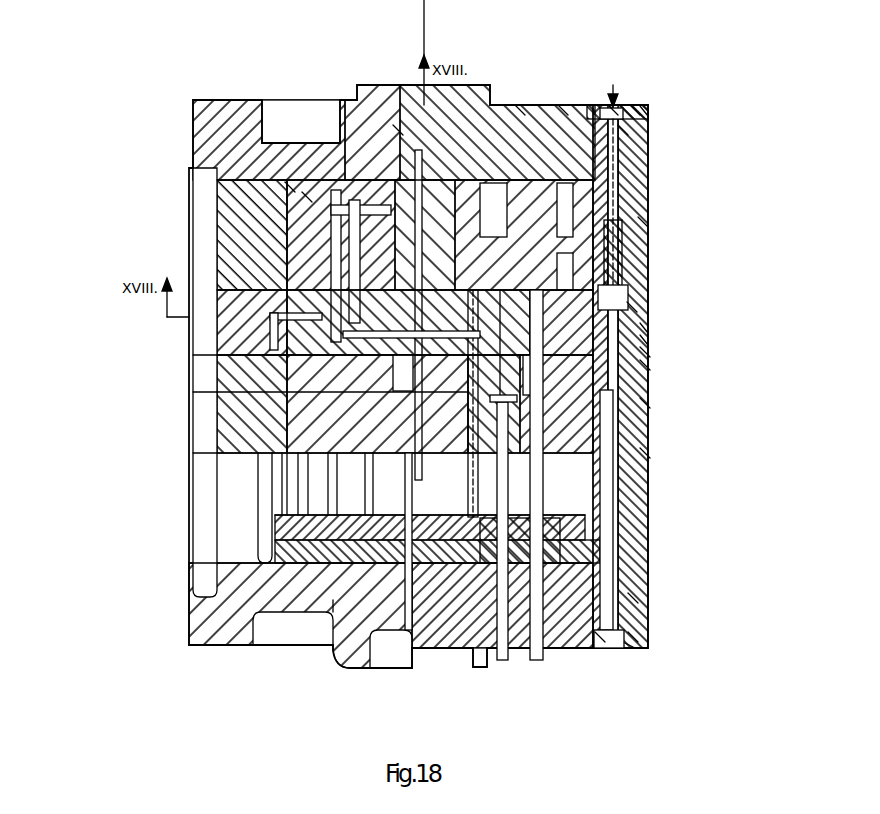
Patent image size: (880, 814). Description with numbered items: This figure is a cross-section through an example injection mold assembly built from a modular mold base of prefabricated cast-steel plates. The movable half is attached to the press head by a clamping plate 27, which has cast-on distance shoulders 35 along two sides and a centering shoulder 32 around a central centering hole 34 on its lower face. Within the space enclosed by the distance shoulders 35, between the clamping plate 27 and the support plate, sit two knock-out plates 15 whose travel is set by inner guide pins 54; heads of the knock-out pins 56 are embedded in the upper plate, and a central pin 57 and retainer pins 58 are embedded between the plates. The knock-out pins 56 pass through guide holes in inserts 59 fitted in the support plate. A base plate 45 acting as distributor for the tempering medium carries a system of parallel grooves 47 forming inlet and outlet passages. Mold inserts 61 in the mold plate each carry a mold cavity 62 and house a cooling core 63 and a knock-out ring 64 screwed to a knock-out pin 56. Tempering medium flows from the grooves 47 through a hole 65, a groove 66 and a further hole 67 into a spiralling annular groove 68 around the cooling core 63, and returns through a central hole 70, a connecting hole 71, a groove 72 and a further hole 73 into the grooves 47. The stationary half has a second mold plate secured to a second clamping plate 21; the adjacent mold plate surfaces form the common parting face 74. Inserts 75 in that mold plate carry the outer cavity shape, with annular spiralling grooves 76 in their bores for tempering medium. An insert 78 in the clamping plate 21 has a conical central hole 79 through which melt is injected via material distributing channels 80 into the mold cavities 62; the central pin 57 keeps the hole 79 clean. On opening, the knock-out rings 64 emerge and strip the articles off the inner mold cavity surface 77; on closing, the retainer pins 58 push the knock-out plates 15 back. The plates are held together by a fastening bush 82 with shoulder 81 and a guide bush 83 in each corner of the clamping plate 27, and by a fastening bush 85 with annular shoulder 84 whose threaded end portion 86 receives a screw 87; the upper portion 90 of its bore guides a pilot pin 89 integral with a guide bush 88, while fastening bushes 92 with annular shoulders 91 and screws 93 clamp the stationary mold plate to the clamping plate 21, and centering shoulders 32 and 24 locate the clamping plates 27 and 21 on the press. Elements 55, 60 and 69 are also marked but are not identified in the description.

The knock-out plates 15 is at (300, 520).
The second clamping plate 21 is at (632, 152).
The centering shoulder 24 is at (343, 100).
The clamping plate 27 is at (228, 640).
The centering shoulder 32 is at (468, 640).
The central centering hole 34 is at (405, 622).
The distance shoulders 35 is at (235, 472).
The base plate 45 is at (235, 392).
The parallel grooves 47 is at (232, 354).
The inner guide pins 54 is at (525, 635).
The recess 55 is at (290, 622).
The knock-out pins 56 is at (462, 575).
The central pin 57 is at (333, 605).
The retainer pins 58 is at (634, 540).
The inserts 59 is at (300, 420).
The lower block 60 is at (230, 638).
The mold inserts 61 is at (252, 278).
The mold cavity 62 is at (268, 187).
The cooling core 63 is at (320, 200).
The knock-out ring 64 is at (648, 270).
The hole 65 is at (245, 322).
The groove 66 is at (643, 222).
The hole 67 is at (258, 255).
The spiralling annular groove 68 is at (478, 107).
The pin 69 is at (430, 150).
The central hole 70 is at (357, 100).
The connecting hole 71 is at (615, 107).
The groove 72 is at (648, 298).
The hole 73 is at (648, 328).
The parting face 74 is at (265, 296).
The inserts 75 is at (290, 187).
The annular spiralling grooves 76 is at (520, 107).
The inner mold cavity surface 77 is at (307, 197).
The insert 78 is at (398, 130).
The central hole 79 is at (440, 140).
The material distributing channels 80 is at (563, 107).
The shoulder 81 is at (632, 648).
The fastening bush 82 is at (634, 637).
The guide bush 83 is at (634, 598).
The annular shoulder 84 is at (634, 307).
The fastening bush 85 is at (650, 352).
The threaded end portion 86 is at (648, 453).
The screw 87 is at (600, 637).
The guide bush 88 is at (648, 240).
The pilot pin 89 is at (648, 365).
The upper portion 90 is at (648, 403).
The annular shoulder 91 is at (646, 110).
The fastening bush 92 is at (625, 130).
The screw 93 is at (635, 107).